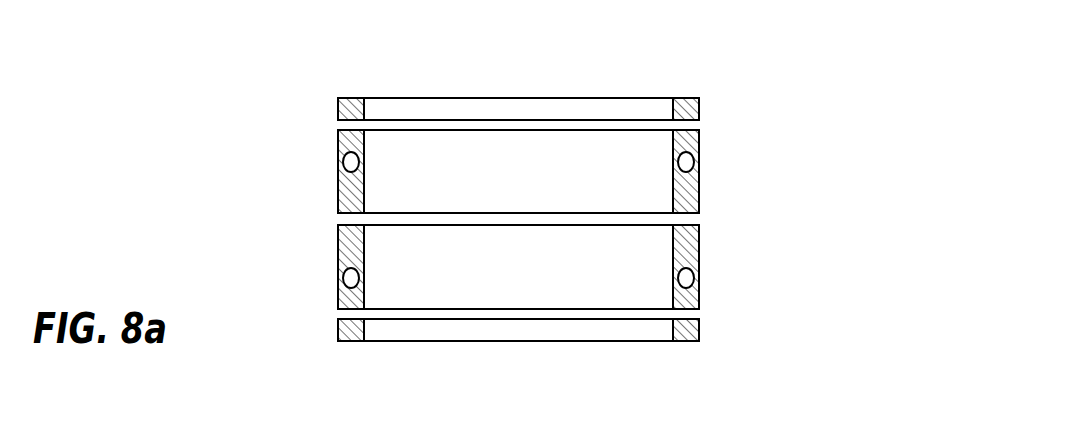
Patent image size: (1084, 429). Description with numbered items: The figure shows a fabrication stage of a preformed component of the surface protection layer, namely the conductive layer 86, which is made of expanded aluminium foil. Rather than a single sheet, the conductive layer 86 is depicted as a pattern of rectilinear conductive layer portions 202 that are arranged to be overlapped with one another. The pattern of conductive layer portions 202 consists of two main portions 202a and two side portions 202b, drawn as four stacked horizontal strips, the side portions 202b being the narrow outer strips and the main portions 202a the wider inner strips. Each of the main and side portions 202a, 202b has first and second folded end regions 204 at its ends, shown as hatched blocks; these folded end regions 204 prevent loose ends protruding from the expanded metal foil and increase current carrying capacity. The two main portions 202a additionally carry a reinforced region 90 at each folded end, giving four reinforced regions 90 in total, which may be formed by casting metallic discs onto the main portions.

The conductive layer 86 is at (350, 58).
The conductive layer portions 202 is at (578, 86).
The main portions 202a is at (648, 193).
The side portions 202b is at (467, 108).
The folded end regions 204 is at (338, 104).
The reinforced region 90 is at (344, 161).